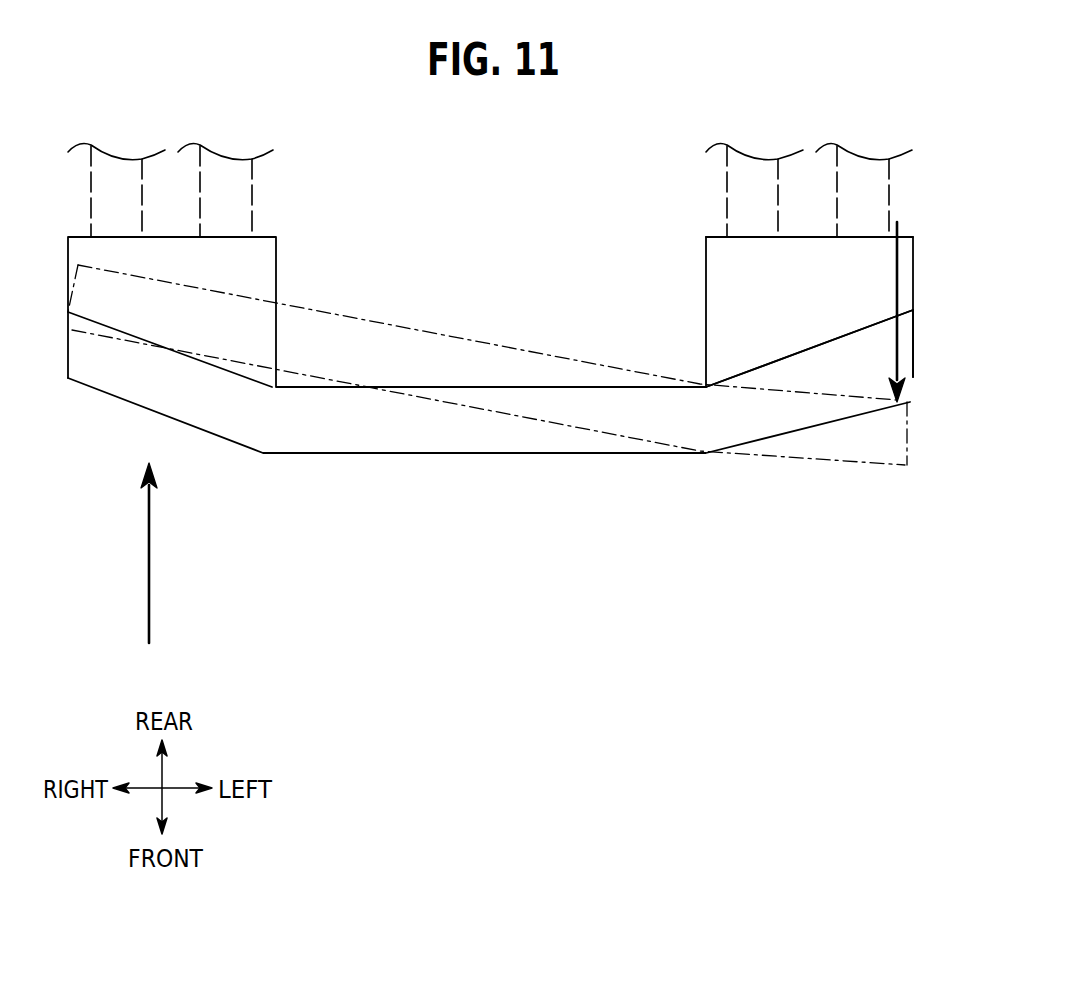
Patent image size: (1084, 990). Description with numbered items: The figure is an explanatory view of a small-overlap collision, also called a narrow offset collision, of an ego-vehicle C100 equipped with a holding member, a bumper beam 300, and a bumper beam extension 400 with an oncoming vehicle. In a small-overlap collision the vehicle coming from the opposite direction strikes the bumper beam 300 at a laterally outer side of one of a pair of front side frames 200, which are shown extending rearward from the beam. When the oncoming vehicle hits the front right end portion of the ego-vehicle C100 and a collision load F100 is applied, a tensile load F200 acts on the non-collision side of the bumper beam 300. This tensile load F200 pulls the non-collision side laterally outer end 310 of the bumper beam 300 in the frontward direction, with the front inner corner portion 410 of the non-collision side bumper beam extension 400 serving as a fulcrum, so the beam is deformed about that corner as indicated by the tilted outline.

The front side frame 200 is at (253, 202).
The bumper beam 300 is at (467, 405).
The laterally outer end 310 is at (913, 347).
The bumper beam extension 400 is at (727, 290).
The front inner corner portion 410 is at (705, 387).
The collision load F100 is at (152, 582).
The tensile load F200 is at (918, 267).
The ego-vehicle C100 is at (580, 482).